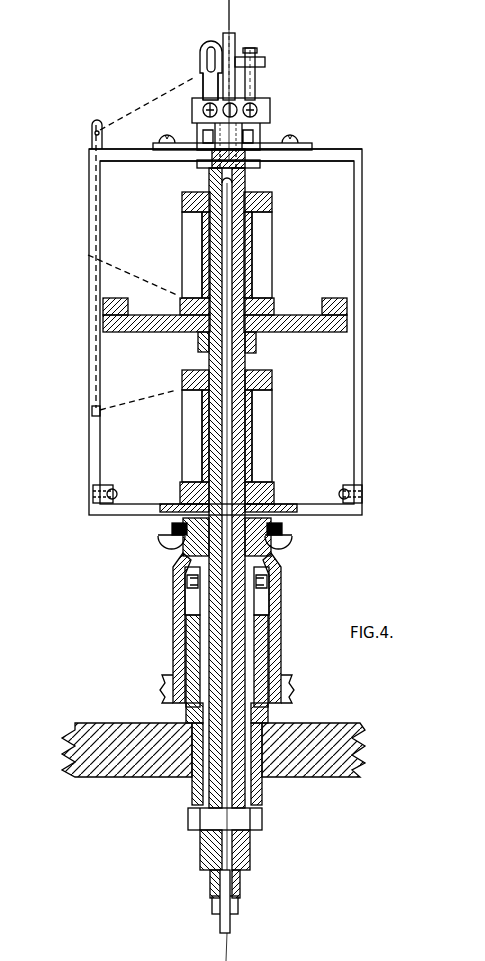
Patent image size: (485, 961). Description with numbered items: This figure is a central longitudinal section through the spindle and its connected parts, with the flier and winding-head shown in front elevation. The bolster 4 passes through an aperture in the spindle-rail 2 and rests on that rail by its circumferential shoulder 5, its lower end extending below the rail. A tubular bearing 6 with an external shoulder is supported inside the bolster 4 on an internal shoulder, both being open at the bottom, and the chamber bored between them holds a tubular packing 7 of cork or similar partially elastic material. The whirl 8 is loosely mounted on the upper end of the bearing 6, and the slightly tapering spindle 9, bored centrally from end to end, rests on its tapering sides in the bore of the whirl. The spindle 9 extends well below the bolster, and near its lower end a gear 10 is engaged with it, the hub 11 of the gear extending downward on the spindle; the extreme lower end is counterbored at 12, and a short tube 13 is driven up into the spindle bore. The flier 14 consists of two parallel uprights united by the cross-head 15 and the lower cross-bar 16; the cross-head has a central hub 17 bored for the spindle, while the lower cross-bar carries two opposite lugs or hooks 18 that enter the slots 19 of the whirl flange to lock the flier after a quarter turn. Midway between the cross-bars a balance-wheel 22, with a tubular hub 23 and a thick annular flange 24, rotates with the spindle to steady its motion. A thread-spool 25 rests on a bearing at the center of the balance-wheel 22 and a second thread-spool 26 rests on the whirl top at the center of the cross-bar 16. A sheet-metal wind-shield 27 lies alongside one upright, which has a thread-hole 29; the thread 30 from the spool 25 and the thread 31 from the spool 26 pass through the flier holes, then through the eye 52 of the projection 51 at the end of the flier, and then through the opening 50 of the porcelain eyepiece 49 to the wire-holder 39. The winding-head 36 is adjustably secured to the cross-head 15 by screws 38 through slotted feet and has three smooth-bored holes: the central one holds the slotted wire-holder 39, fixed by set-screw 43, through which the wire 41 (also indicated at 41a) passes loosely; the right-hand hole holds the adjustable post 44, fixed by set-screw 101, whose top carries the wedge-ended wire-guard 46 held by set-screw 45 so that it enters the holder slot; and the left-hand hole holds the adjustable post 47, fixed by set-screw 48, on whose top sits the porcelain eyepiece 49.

The spindle-rail 2 is at (202, 750).
The bolster 4 is at (263, 716).
The circumferential shoulder 5 is at (186, 718).
The tubular bearing 6 is at (256, 603).
The tubular packing 7 is at (193, 615).
The whirl 8 is at (281, 662).
The spindle 9 is at (247, 180).
The gear 10 is at (211, 819).
The hub 11 is at (238, 864).
The counterbore 12 is at (235, 912).
The short tube 13 is at (218, 930).
The flier 14 is at (89, 450).
The cross-head 15 is at (342, 148).
The lower cross-bar 16 is at (105, 515).
The central hub 17 is at (197, 165).
The lugs or hooks 18 is at (168, 547).
The slots 19 is at (172, 529).
The balance-wheel 22 is at (148, 332).
The tubular hub 23 is at (198, 342).
The annular flange 24 is at (115, 298).
The thread-spool 25 is at (273, 203).
The thread-spool 26 is at (273, 380).
The wind-shield 27 is at (89, 380).
The thread-hole 29 is at (92, 413).
The thread 30 is at (130, 272).
The thread 31 is at (132, 403).
The winding-head 36 is at (270, 100).
The screws 38 is at (167, 135).
The wire-holder 39 is at (236, 37).
The wire 41 is at (230, 946).
The axis line upper end 41a is at (229, 16).
The set-screw 43 is at (235, 107).
The adjustable post 44 is at (258, 58).
The set-screw 45 is at (257, 50).
The wire-guard 46 is at (268, 62).
The adjustable post 47 is at (203, 93).
The set-screw 48 is at (203, 110).
The porcelain eyepiece 49 is at (203, 45).
The eye or opening 50 is at (207, 60).
The projection or eyepiece 51 is at (93, 123).
The eye or opening 52 is at (90, 134).
The set-screw 101 is at (257, 110).